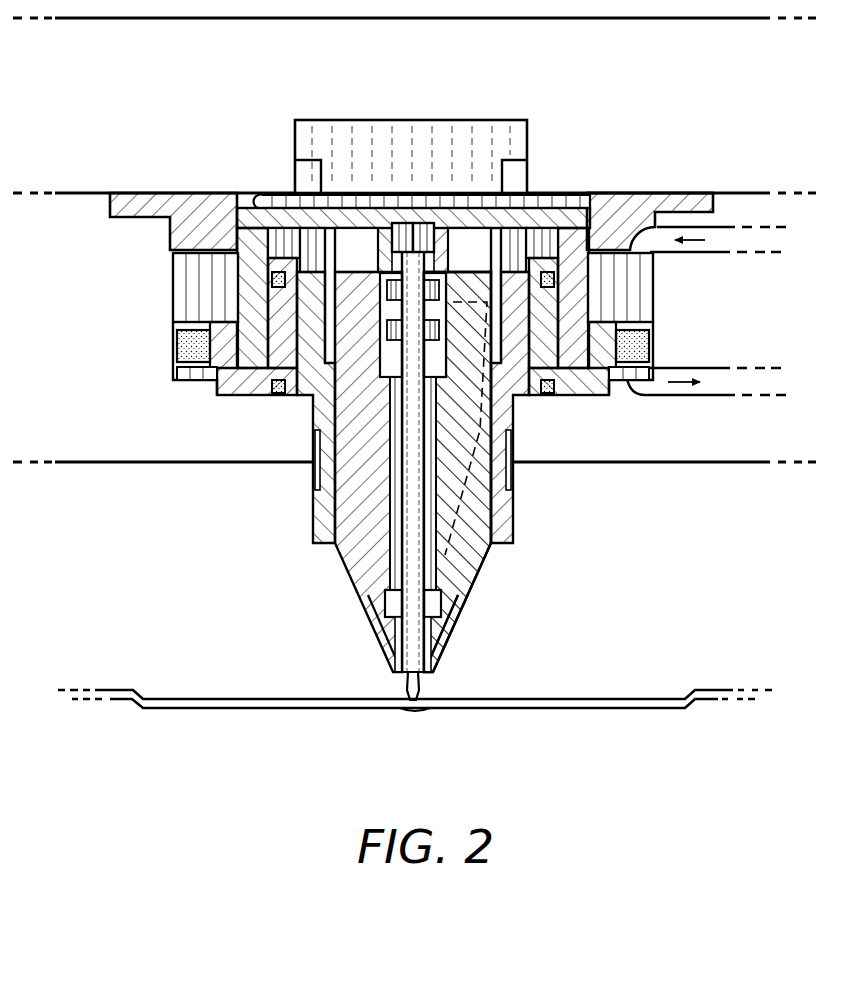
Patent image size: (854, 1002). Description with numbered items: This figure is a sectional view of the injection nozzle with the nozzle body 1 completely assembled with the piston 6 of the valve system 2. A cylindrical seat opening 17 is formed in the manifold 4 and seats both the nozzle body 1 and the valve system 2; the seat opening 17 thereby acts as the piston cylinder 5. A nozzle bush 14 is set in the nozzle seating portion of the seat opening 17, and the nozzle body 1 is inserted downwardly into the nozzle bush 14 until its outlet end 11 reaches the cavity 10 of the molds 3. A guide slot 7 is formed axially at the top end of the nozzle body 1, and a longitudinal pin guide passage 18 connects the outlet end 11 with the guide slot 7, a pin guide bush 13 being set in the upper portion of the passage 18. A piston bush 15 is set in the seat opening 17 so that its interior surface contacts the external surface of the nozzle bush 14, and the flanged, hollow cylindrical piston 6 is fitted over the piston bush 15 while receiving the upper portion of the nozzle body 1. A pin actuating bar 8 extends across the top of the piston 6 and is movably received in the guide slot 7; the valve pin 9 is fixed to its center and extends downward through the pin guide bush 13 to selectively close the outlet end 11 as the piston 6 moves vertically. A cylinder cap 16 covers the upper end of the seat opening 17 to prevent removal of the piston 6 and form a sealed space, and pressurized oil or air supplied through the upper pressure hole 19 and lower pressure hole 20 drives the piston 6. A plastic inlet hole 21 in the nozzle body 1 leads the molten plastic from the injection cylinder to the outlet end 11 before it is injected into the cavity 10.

The nozzle body 1 is at (460, 592).
The valve system 2 is at (684, 177).
The molds 3 is at (122, 556).
The manifold 4 is at (120, 84).
The piston cylinder 5 is at (633, 283).
The piston 6 is at (588, 243).
The guide slot 7 is at (355, 135).
The pin actuating bar 8 is at (530, 215).
The valve pin 9 is at (412, 228).
The cavity 10 is at (228, 703).
The outlet end 11 is at (430, 680).
The pin guide bush 13 is at (437, 460).
The nozzle bush 14 is at (326, 484).
The piston bush 15 is at (275, 330).
The cylinder cap 16 is at (198, 192).
The seat opening 17 is at (190, 378).
The pin guide passage 18 is at (397, 563).
The upper pressure hole 19 is at (738, 252).
The lower pressure hole 20 is at (728, 388).
The plastic inlet hole 21 is at (462, 465).